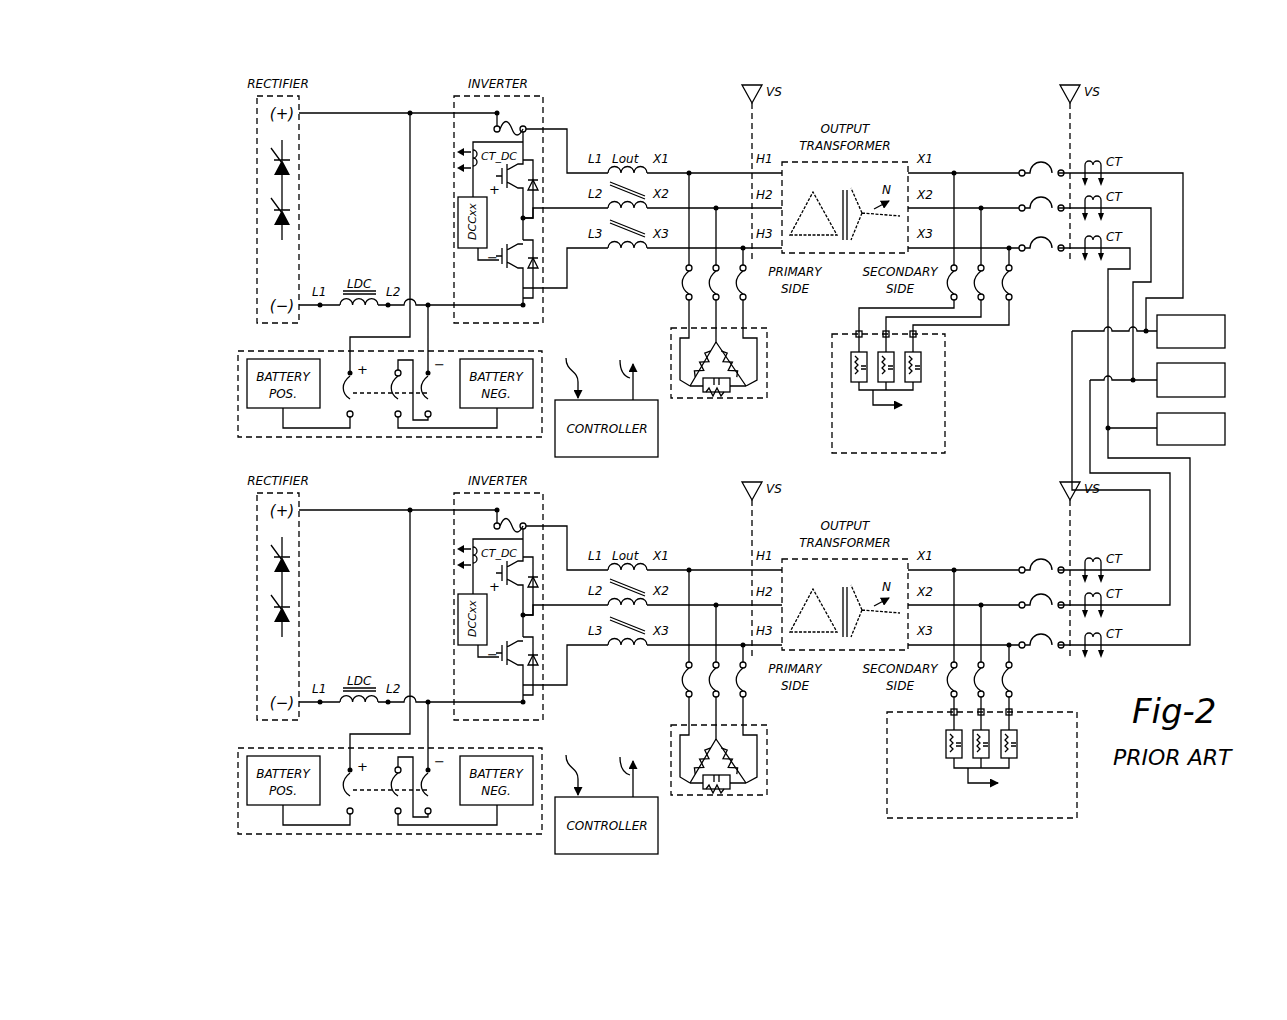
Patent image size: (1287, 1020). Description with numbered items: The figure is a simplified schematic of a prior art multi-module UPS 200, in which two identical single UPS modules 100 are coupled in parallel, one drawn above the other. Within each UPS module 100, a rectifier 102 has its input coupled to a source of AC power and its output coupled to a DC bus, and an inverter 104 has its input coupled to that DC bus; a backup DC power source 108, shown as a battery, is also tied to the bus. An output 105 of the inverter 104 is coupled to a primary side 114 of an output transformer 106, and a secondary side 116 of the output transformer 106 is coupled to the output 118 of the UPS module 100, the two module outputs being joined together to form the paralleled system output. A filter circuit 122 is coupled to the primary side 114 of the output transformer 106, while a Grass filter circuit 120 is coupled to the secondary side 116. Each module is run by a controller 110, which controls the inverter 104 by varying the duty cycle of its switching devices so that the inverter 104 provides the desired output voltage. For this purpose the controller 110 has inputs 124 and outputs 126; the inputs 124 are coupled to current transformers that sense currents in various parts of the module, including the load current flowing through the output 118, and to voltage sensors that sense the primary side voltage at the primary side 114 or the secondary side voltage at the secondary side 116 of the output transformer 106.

The UPS module 100 is at (228, 452).
The rectifier 102 is at (299, 98).
The inverter 104 is at (454, 98).
The output of inverter 105 is at (548, 112).
The output transformer 106 is at (905, 160).
The backup DC power source 108 is at (238, 410).
The controller 110 is at (638, 457).
The primary side of output transformer 114 is at (772, 140).
The secondary side of output transformer 116 is at (948, 133).
The output of UPS module 118 is at (1218, 306).
The Grass filter circuit 120 is at (945, 422).
The filter circuit 122 is at (768, 384).
The inputs of controller 124 is at (576, 565).
The outputs of controller 126 is at (623, 566).
The multi-module UPS 200 is at (206, 178).